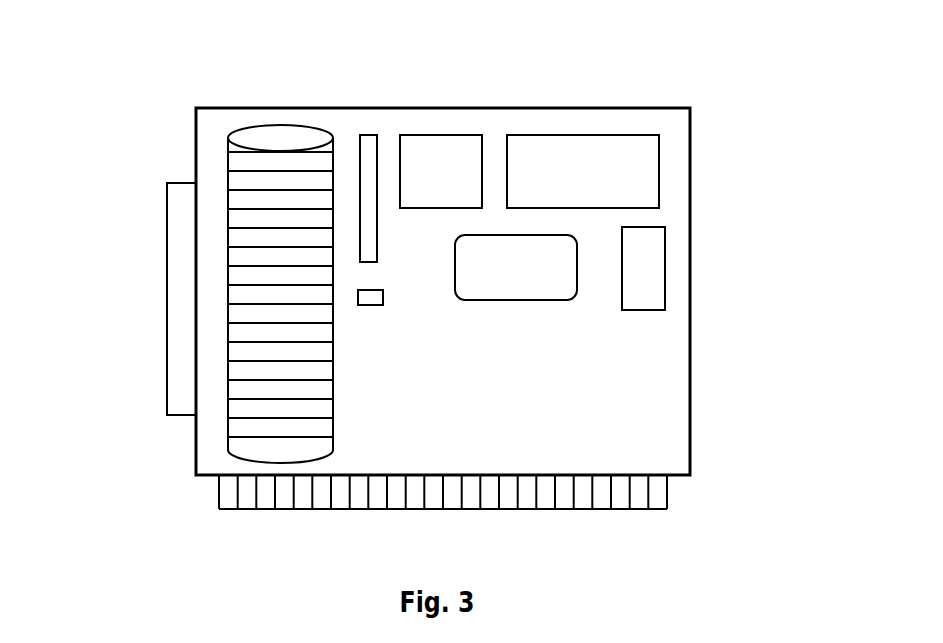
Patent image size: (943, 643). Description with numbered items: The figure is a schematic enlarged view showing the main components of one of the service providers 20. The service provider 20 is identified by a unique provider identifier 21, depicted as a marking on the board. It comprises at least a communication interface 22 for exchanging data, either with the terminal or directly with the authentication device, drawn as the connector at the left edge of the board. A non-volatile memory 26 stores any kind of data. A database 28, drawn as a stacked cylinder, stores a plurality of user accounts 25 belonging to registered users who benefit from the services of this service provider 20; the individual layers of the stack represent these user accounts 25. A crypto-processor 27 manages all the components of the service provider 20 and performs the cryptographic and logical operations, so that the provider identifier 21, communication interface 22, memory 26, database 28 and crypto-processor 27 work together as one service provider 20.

The service provider 20 is at (675, 385).
The provider identifier 21 is at (502, 405).
The communication interface 22 is at (177, 357).
The user accounts 25 is at (240, 160).
The non-volatile memory 26 is at (648, 170).
The crypto-processor 27 is at (567, 265).
The database 28 is at (283, 133).